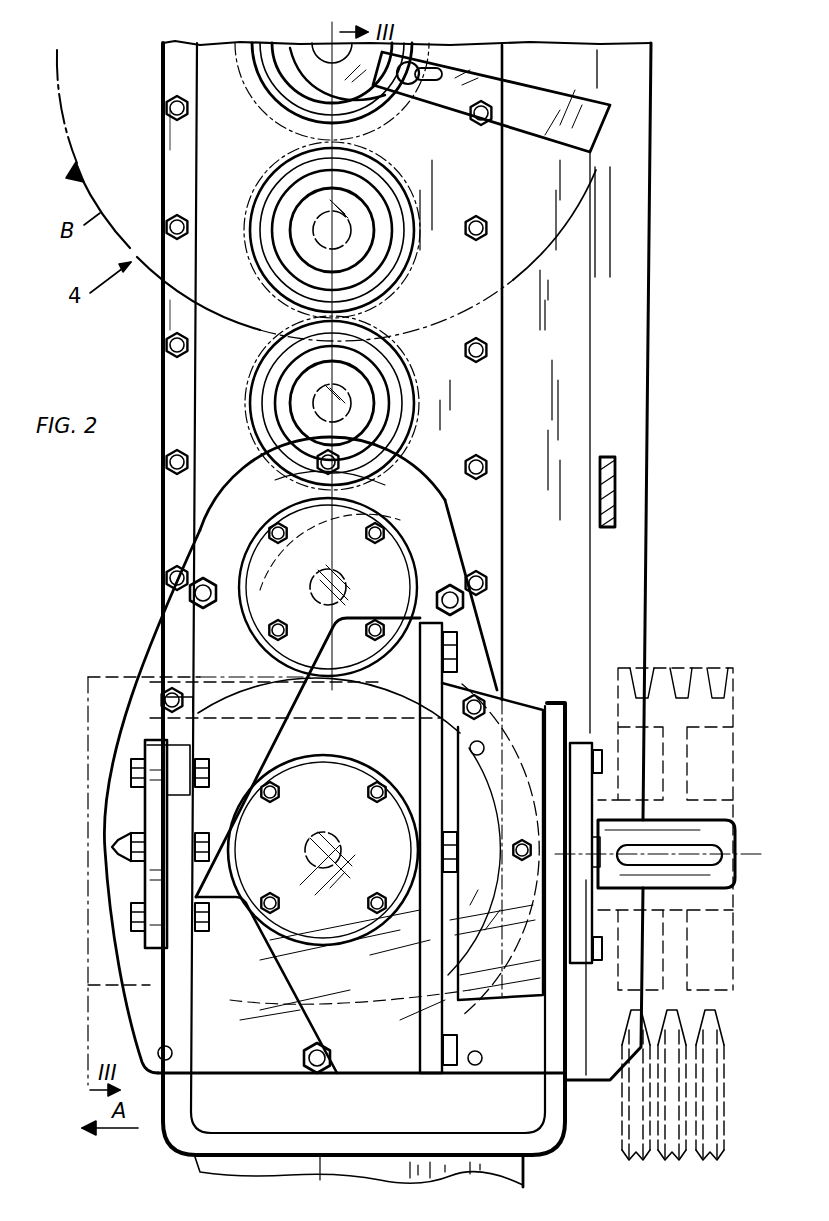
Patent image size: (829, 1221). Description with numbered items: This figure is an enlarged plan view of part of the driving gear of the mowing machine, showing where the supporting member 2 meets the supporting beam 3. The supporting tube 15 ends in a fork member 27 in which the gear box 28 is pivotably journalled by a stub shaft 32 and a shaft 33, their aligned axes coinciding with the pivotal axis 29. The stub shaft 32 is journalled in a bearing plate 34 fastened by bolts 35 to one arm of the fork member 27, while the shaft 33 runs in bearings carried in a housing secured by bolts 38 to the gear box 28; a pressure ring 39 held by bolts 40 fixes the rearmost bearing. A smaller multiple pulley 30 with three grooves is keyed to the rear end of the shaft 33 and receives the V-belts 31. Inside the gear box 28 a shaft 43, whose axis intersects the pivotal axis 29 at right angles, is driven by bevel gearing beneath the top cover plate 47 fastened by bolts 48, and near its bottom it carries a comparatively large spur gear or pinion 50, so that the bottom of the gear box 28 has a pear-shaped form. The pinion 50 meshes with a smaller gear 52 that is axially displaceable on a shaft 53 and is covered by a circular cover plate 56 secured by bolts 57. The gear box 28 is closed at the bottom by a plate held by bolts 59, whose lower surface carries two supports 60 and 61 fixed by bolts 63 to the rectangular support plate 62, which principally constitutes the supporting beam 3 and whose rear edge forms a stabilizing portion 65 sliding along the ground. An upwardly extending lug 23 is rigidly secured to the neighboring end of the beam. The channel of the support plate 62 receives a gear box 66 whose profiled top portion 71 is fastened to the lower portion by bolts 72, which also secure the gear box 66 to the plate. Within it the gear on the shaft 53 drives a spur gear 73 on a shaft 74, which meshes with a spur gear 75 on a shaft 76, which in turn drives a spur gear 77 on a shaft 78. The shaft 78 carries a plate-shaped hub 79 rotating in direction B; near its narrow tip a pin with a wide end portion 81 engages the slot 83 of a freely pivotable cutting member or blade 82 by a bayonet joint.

The supporting member 2 is at (188, 1162).
The supporting beam 3 is at (655, 180).
The supporting tube 15 is at (525, 1176).
The lug 23 is at (612, 500).
The fork member 27 is at (423, 1118).
The gear box 28 is at (470, 650).
The pivotal axis 29 is at (745, 856).
The multiple pulley 30 is at (722, 712).
The V-belts 31 is at (720, 675).
The stub shaft 32 is at (130, 818).
The shaft 33 is at (692, 825).
The bearing plate 34 is at (150, 748).
The bolts 35 is at (130, 915).
The bolts 38 is at (465, 660).
The pressure ring 39 is at (588, 760).
The bolts 40 is at (600, 952).
The shaft 43 is at (326, 830).
The cover plate 47 is at (360, 778).
The bolts 48 is at (282, 798).
The spur gear or pinion 50 is at (240, 995).
The gear 52 is at (250, 556).
The shaft 53 is at (308, 586).
The cover plate 56 is at (262, 612).
The bolts 57 is at (375, 545).
The bolts 59 is at (212, 615).
The support 60 is at (470, 960).
The support 61 is at (150, 988).
The support plate 62 is at (655, 612).
The bolts 63 is at (508, 715).
The stabilizing portion 65 is at (565, 428).
The gear box 66 is at (488, 332).
The top portion 71 is at (215, 468).
The bolts 72 is at (165, 578).
The spur gear 73 is at (256, 412).
The shaft 74 is at (258, 373).
The spur gear 75 is at (258, 212).
The shaft 76 is at (262, 238).
The spur gear 77 is at (262, 106).
The shaft 78 is at (270, 74).
The hub 79 is at (302, 60).
The wide end portion 81 is at (413, 62).
The cutting member or blade 82 is at (575, 103).
The slot 83 is at (440, 103).